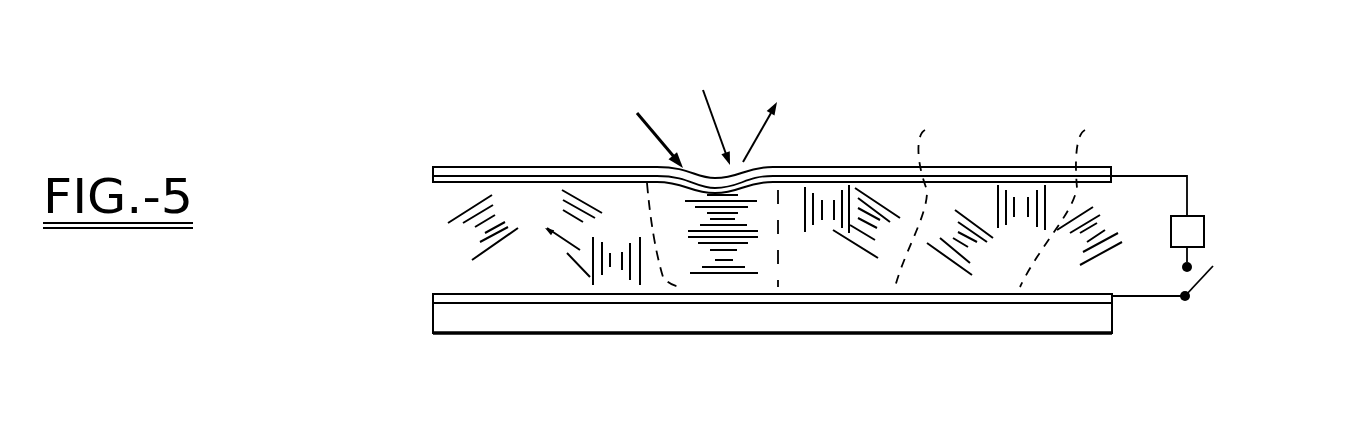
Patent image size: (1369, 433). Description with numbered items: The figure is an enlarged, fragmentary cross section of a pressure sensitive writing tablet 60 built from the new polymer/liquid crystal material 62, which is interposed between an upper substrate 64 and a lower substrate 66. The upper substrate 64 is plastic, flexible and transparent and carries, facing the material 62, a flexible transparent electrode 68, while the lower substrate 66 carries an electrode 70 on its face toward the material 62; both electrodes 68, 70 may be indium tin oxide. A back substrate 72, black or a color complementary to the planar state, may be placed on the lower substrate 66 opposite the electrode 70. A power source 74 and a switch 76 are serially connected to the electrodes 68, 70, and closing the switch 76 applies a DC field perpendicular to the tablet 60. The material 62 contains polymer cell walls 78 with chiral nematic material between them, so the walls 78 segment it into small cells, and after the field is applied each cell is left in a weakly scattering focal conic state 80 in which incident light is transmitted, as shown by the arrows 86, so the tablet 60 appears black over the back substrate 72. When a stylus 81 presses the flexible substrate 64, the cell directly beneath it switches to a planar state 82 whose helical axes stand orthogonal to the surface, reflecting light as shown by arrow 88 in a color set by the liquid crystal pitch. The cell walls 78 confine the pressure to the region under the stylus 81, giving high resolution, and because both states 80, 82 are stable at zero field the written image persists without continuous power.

The pressure sensitive writing tablet 60 is at (1070, 88).
The polymer/liquid crystal material 62 is at (412, 239).
The substrate 64 is at (457, 166).
The substrate 66 is at (433, 318).
The flexible transparent electrode 68 is at (458, 183).
The electrode 70 is at (455, 294).
The back substrate 72 is at (1112, 335).
The power source 74 is at (1204, 228).
The switch 76 is at (1205, 276).
The polymer cell walls 78 is at (1008, 201).
The focal conic state 80 is at (862, 247).
The stylus 81 is at (635, 113).
The planar state 82 is at (728, 275).
The arrows 86 is at (526, 212).
The arrow 88 is at (760, 133).